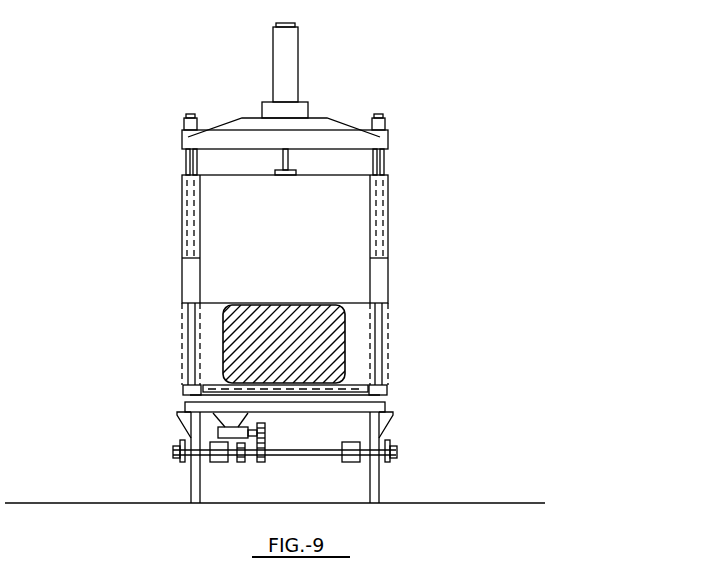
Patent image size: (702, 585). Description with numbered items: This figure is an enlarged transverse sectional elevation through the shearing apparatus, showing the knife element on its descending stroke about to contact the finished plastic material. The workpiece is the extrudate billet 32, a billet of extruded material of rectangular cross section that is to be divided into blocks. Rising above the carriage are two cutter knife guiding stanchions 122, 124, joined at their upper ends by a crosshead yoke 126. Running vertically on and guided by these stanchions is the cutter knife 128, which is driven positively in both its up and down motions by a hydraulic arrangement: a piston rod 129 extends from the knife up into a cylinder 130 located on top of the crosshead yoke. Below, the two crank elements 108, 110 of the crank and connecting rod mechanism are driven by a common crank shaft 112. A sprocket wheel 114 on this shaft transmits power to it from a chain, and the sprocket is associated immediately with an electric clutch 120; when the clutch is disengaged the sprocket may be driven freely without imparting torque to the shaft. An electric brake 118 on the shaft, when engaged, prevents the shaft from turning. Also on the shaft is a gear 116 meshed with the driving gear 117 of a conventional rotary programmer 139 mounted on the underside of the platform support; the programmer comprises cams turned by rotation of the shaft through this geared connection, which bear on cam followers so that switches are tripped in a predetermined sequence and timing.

The extrudate billet 32 is at (293, 314).
The crank element 108 is at (179, 452).
The crank element 110 is at (391, 451).
The crank shaft 112 is at (304, 458).
The sprocket wheel 114 is at (241, 463).
The gear 116 is at (263, 463).
The driving gear 117 is at (265, 434).
The electric brake 118 is at (353, 443).
The electric clutch 120 is at (222, 462).
The cutter knife guiding stanchion 122 is at (386, 160).
The cutter knife guiding stanchion 124 is at (182, 160).
The crosshead yoke 126 is at (352, 125).
The cutter knife 128 is at (285, 239).
The piston rod 129 is at (282, 158).
The cylinder 130 is at (298, 46).
The rotary programmer 139 is at (254, 423).